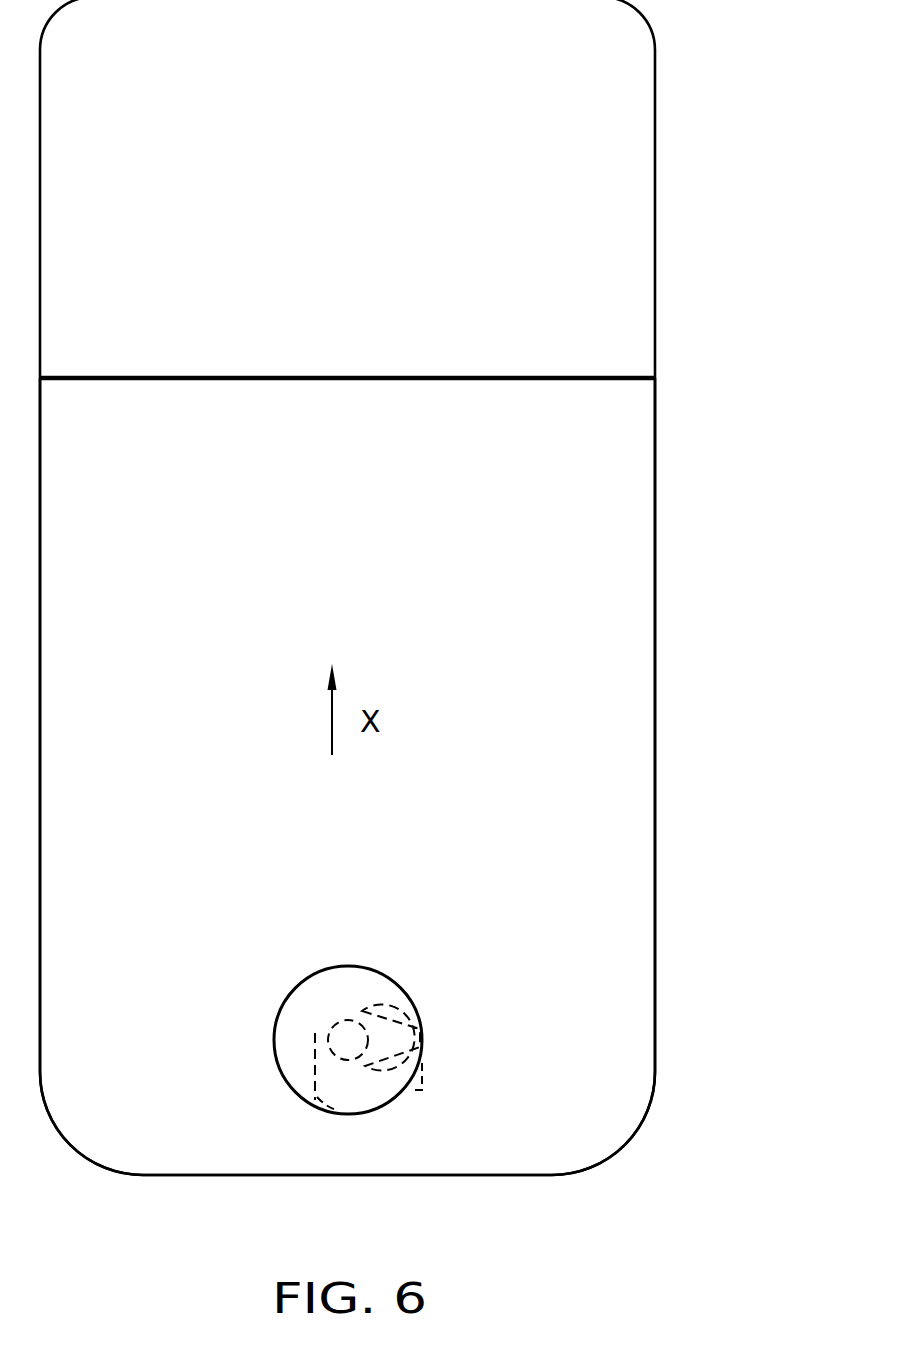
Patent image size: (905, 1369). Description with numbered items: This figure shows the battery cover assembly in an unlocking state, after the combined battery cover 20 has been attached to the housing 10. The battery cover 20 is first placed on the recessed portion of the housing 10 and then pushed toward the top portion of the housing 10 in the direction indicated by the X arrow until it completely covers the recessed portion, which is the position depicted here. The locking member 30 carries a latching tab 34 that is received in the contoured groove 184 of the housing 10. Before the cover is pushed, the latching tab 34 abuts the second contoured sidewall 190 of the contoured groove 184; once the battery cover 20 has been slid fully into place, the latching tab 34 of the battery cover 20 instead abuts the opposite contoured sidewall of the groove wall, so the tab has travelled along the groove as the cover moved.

The housing 10 is at (575, 145).
The battery cover 20 is at (508, 567).
The locking member 30 is at (360, 992).
The latching tab 34 is at (407, 1043).
The contoured groove 184 is at (333, 1082).
The second contoured sidewall 190 is at (349, 1113).